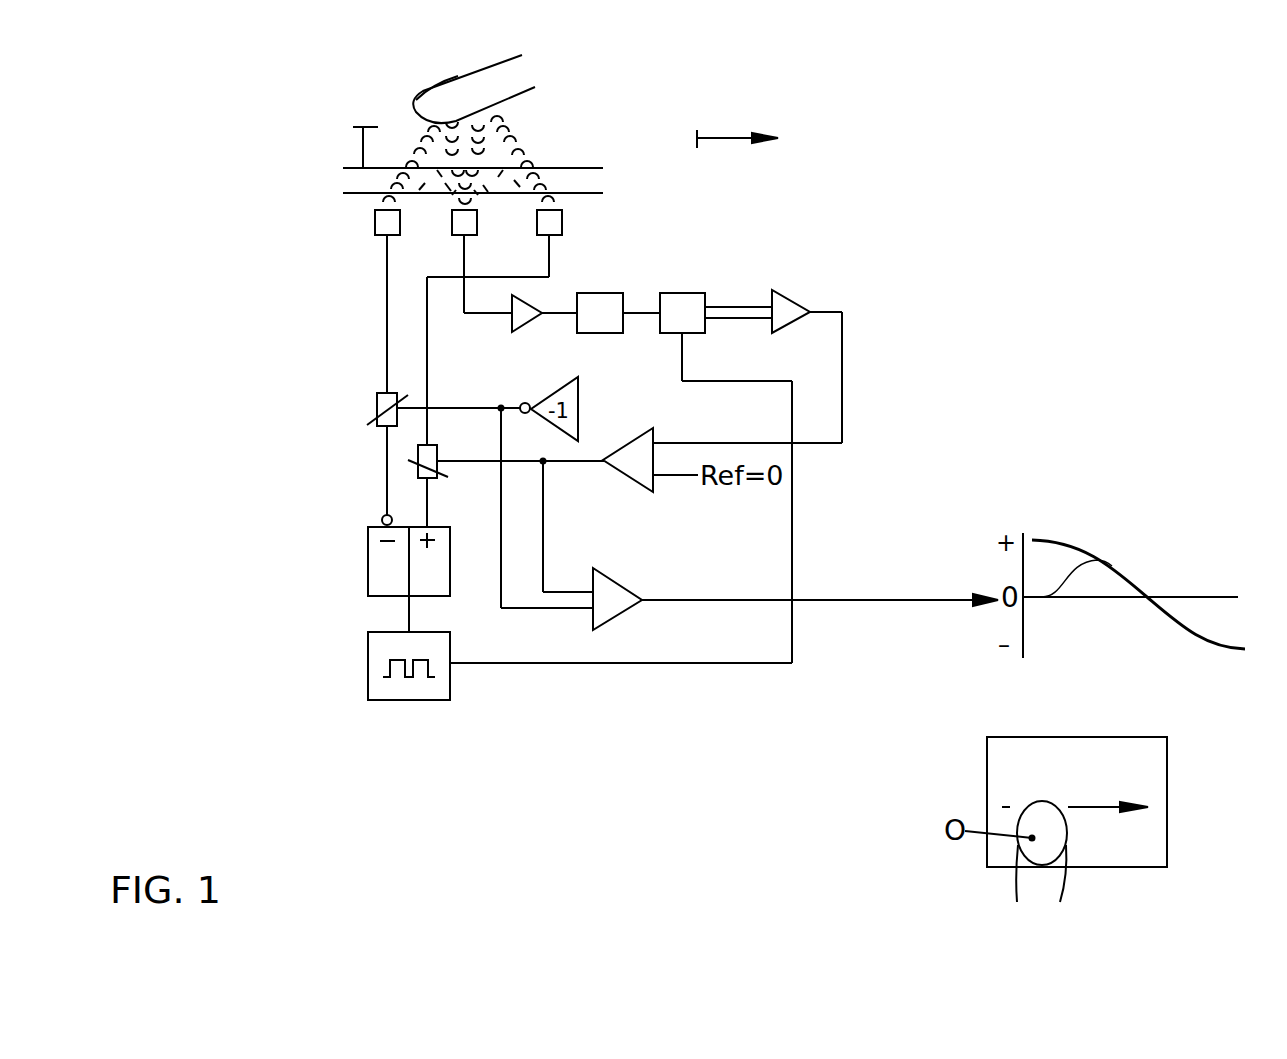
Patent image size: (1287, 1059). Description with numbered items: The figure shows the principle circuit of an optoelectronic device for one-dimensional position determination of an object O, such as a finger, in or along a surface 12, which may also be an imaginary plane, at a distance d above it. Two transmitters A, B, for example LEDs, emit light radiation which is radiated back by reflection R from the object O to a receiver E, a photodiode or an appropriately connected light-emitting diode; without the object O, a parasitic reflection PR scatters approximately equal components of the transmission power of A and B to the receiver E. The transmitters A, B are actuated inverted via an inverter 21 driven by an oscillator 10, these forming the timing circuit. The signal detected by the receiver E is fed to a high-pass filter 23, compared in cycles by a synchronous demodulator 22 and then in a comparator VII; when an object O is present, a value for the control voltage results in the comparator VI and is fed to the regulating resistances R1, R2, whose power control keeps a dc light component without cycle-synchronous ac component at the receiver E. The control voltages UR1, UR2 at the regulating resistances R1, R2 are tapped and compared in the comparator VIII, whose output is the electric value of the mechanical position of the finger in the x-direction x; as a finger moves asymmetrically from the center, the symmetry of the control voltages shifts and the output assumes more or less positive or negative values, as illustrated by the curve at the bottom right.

The object O is at (483, 92).
The reflection R is at (515, 138).
The distance d is at (363, 147).
The surface 12 is at (560, 169).
The parasitic reflection PR is at (468, 232).
The transmitter A is at (387, 222).
The receiver E is at (464, 222).
The transmitter B is at (549, 222).
The high-pass filter 23 is at (600, 293).
The synchronous demodulator 22 is at (685, 293).
The comparator V II VII is at (838, 228).
The comparator V I VI is at (627, 445).
The comparator V III VIII is at (686, 520).
The regulating resistance R1 is at (394, 394).
The regulating resistance R2 is at (439, 450).
The control voltage UR1 is at (458, 393).
The control voltage UR2 is at (520, 447).
The inverter 21 is at (440, 585).
The oscillator 10 is at (438, 690).
The x-direction x is at (746, 138).